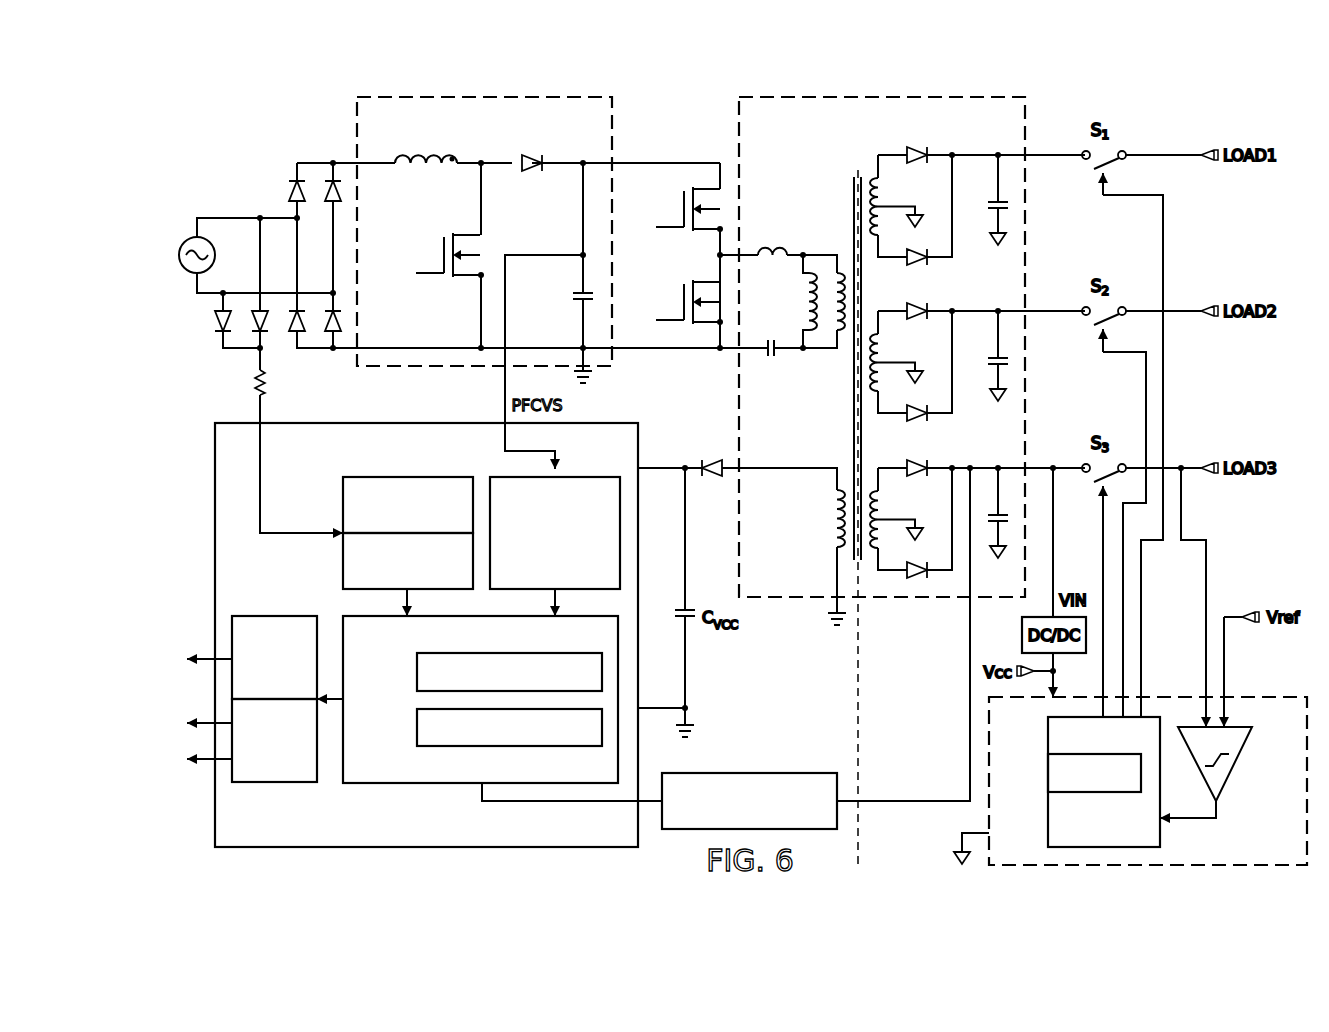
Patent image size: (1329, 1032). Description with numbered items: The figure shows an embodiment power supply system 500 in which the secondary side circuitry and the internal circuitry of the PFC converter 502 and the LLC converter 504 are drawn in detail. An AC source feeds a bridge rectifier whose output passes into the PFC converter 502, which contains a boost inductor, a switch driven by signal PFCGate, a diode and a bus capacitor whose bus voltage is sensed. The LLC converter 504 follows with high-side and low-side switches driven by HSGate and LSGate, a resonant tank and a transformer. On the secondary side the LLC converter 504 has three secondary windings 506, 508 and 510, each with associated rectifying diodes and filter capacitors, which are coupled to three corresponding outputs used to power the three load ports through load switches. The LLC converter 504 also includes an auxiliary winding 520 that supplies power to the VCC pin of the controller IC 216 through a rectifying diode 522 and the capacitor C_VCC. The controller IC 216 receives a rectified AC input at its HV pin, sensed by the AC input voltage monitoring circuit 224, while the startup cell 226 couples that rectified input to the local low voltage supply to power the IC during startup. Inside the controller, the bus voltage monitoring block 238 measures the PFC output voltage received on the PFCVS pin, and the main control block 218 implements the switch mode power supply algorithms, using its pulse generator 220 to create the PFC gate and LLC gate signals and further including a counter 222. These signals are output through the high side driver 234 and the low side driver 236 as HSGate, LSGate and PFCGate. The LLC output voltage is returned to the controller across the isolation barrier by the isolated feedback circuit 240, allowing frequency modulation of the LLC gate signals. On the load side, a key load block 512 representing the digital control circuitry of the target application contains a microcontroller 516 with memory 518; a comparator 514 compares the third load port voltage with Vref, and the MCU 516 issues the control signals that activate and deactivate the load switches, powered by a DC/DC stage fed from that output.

The power supply system 500 is at (176, 152).
The PFC converter 502 is at (352, 125).
The LLC converter 504 is at (734, 128).
The first secondary winding 506 is at (893, 152).
The second secondary winding 508 is at (893, 309).
The third secondary winding 510 is at (893, 466).
The key load block 512 is at (1258, 695).
The comparator 514 is at (1236, 763).
The microcontroller (MCU) 516 is at (1162, 834).
The memory 518 is at (1096, 794).
The auxiliary winding 520 is at (840, 512).
The VCC diode 522 is at (712, 460).
The controller IC 216 is at (210, 505).
The main control block 218 is at (435, 786).
The pulse generator 220 is at (417, 671).
The counter 222 is at (417, 727).
The AC input voltage monitoring circuit 224 is at (343, 562).
The startup cell 226 is at (343, 506).
The high side driver 234 is at (273, 616).
The low side driver 236 is at (272, 784).
The bus voltage monitoring block 238 is at (586, 477).
The isolated feedback circuit 240 is at (748, 773).